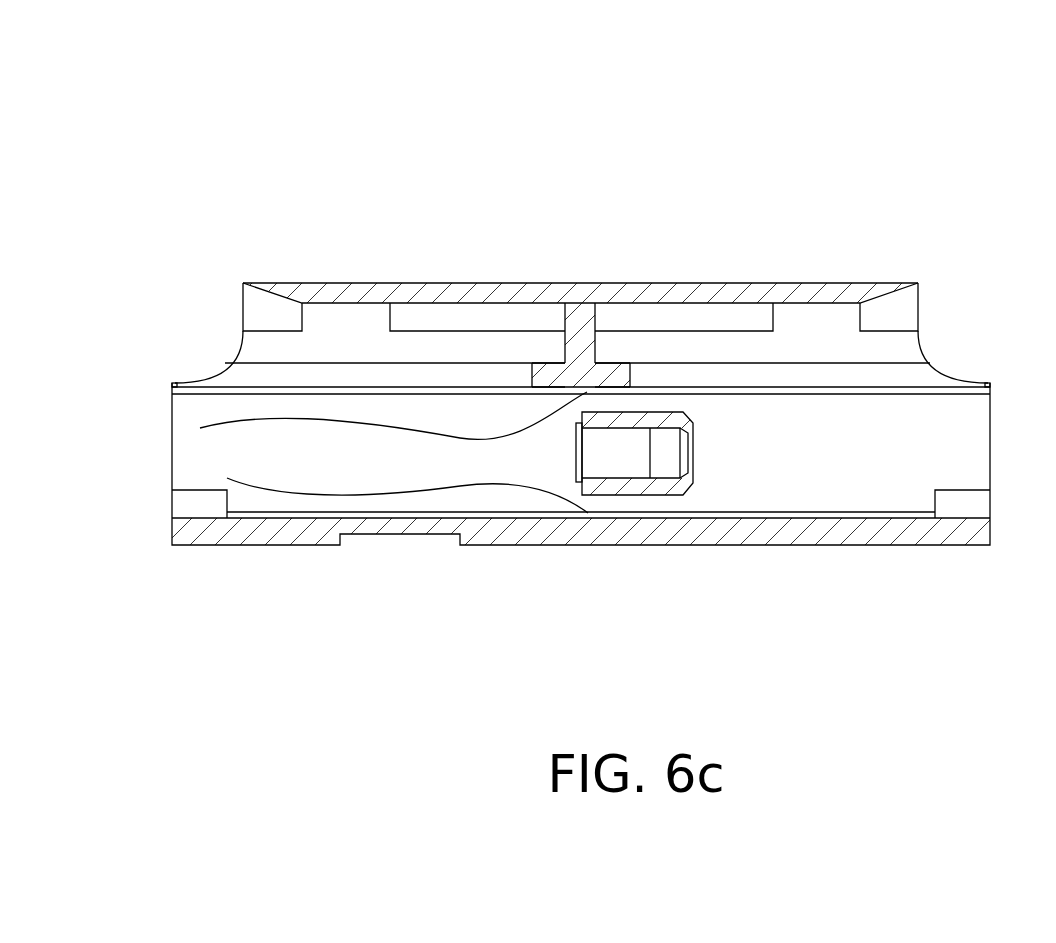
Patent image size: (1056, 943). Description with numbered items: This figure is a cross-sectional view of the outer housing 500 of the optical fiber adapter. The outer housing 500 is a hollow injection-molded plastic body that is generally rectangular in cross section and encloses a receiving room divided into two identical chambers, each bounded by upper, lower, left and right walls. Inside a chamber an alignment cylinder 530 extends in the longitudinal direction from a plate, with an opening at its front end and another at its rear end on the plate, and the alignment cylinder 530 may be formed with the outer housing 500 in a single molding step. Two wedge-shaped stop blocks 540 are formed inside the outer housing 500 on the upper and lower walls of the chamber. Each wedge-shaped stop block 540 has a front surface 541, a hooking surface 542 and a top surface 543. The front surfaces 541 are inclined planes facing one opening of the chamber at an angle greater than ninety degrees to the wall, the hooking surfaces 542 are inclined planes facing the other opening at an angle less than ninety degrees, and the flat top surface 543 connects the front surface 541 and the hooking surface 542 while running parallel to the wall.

The outer housing 500 is at (559, 130).
The alignment cylinder 530 is at (667, 487).
The wedge-shaped stop block 540 is at (586, 390).
The front surface 541 is at (587, 388).
The hooking surface 542 is at (587, 390).
The top surface 543 is at (227, 478).